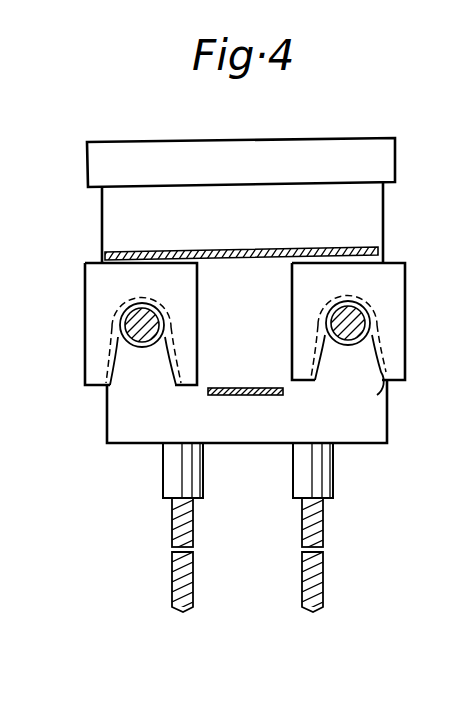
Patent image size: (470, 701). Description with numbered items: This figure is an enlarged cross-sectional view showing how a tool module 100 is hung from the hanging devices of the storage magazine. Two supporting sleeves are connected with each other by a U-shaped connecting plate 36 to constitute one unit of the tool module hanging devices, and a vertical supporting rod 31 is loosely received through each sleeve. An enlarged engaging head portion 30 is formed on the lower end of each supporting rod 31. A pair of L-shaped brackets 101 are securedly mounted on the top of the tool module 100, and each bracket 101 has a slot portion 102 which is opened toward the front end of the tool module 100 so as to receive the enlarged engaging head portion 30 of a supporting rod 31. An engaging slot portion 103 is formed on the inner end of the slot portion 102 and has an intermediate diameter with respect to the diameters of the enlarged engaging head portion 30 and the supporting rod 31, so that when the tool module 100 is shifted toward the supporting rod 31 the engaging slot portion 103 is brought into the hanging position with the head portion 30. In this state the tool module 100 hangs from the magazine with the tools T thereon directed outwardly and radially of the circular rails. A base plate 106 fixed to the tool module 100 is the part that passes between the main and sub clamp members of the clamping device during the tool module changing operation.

The base plate 106 is at (247, 155).
The U-shaped connecting plate 36 is at (243, 250).
The L-shaped bracket 101 is at (87, 290).
The engaging slot portion 103 is at (168, 302).
The supporting rod 31 is at (174, 322).
The enlarged engaging head portion 30 is at (145, 348).
The slot portion 102 is at (387, 393).
The tool module 100 is at (262, 430).
The tools T is at (193, 583).